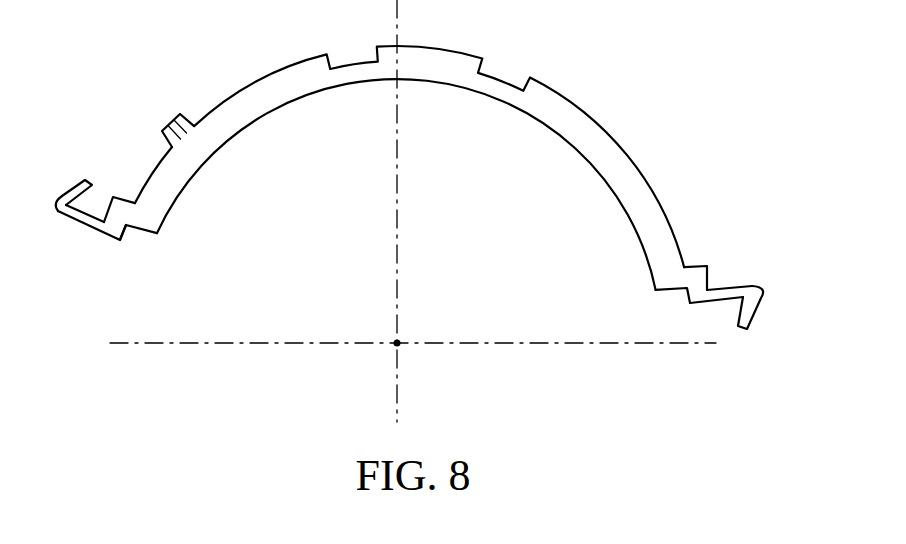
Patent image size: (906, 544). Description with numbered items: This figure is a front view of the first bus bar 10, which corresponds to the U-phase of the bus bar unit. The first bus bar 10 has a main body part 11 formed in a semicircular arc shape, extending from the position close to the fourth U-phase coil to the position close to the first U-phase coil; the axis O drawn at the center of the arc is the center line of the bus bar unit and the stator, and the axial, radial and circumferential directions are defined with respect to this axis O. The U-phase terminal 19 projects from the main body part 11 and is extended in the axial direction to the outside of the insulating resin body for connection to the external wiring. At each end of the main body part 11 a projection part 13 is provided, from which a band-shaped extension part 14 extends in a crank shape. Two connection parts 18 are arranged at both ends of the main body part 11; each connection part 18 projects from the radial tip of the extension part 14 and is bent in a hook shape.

The first bus bar 10 is at (660, 179).
The main body part 11 is at (328, 80).
The projection part 13 is at (124, 218).
The extension part 14 is at (96, 229).
The connection part 18 is at (57, 206).
The U-phase terminal 19 is at (163, 133).
The axis O is at (400, 340).